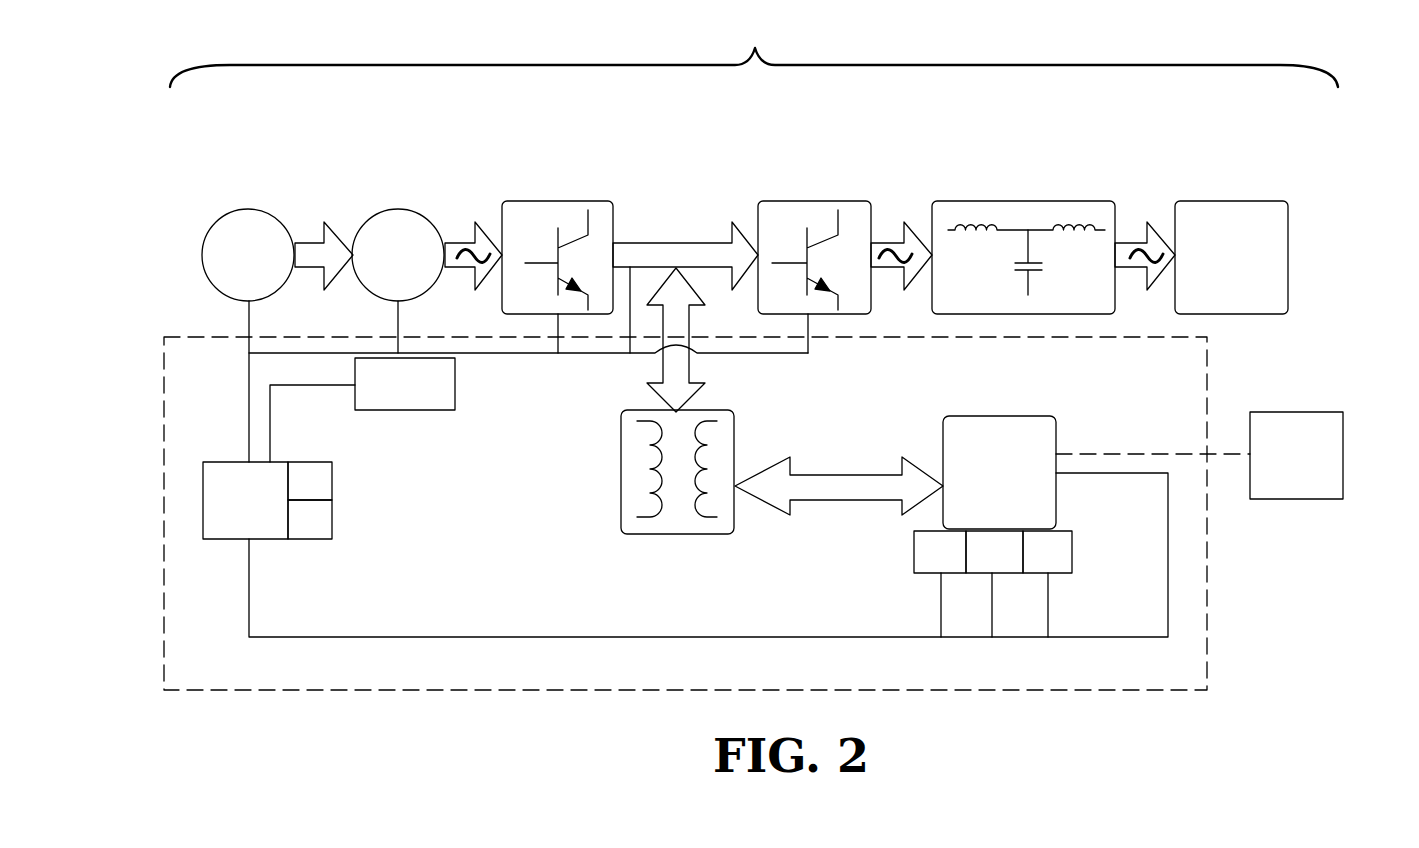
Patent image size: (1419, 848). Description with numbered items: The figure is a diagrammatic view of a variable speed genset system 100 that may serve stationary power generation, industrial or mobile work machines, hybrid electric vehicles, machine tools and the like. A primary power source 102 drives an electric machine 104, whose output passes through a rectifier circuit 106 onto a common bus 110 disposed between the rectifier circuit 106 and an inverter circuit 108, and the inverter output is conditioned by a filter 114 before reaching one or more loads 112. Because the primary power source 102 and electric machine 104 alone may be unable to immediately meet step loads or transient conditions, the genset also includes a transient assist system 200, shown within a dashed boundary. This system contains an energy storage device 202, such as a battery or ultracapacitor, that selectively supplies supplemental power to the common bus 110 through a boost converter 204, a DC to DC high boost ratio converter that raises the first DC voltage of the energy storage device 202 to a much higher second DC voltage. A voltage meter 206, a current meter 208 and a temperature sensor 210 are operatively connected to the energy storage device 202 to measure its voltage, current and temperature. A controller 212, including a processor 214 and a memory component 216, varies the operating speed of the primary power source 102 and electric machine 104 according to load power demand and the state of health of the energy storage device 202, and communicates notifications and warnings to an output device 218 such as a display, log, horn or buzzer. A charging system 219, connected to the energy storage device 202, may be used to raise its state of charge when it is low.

The variable speed genset system 100 is at (754, 52).
The primary power source 102 is at (248, 228).
The electric machine 104 is at (388, 228).
The rectifier circuit 106 is at (512, 213).
The inverter circuit 108 is at (858, 212).
The common bus 110 is at (660, 250).
The loads 112 is at (1273, 215).
The filter 114 is at (1092, 212).
The transient assist system 200 is at (152, 393).
The energy storage device 202 is at (1057, 442).
The boost converter 204 is at (635, 462).
The voltage meter 206 is at (921, 552).
The current meter 208 is at (1065, 555).
The temperature sensor 210 is at (1000, 568).
The controller 212 is at (245, 492).
The processor 214 is at (313, 478).
The memory component 216 is at (312, 520).
The output device 218 is at (362, 410).
The charging system 219 is at (1290, 420).